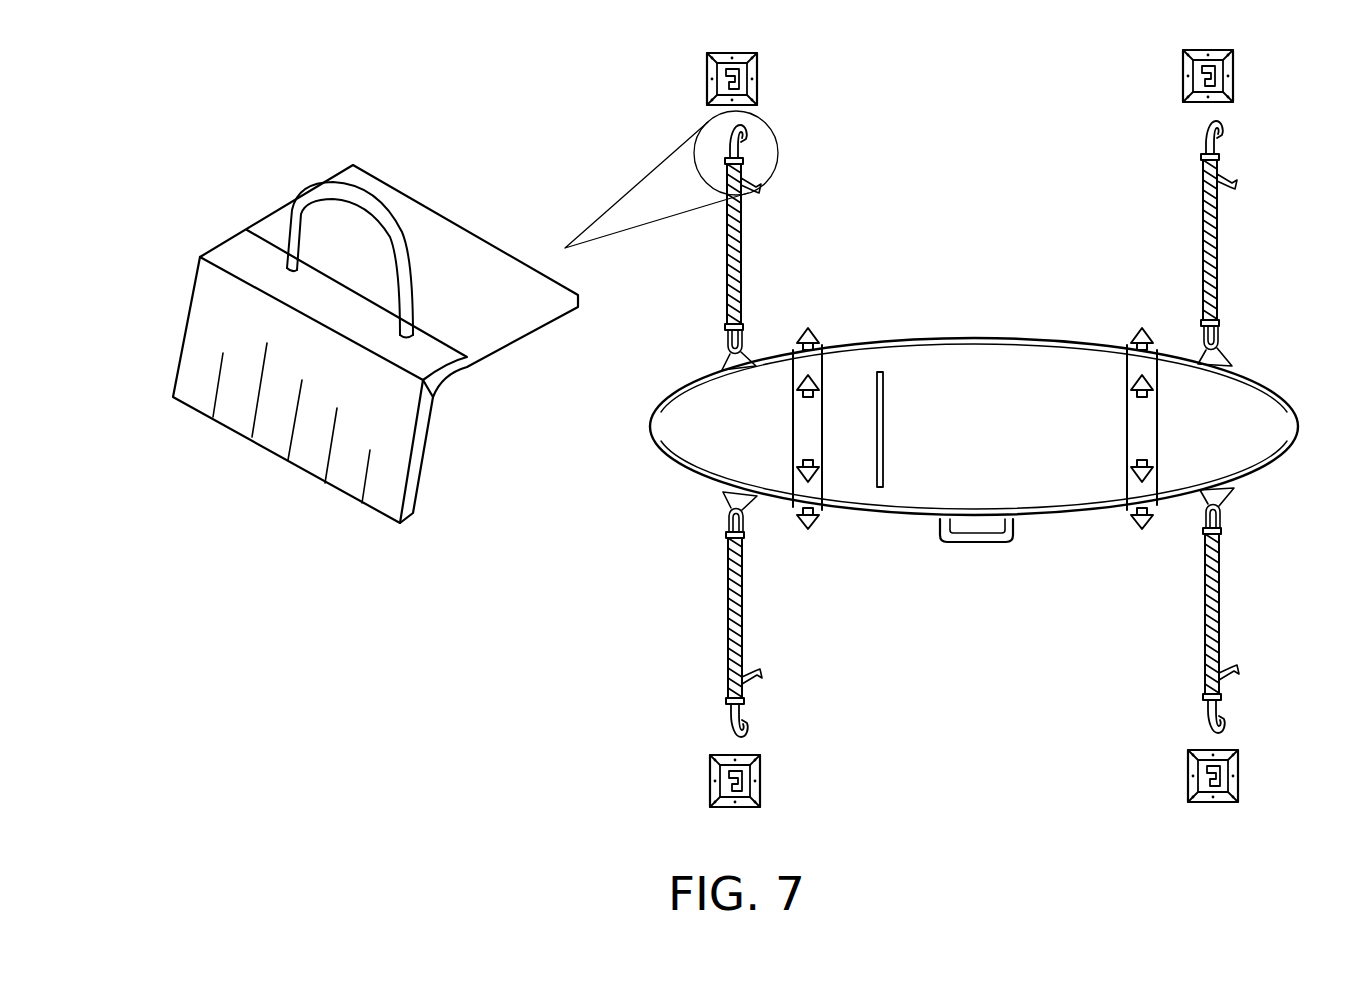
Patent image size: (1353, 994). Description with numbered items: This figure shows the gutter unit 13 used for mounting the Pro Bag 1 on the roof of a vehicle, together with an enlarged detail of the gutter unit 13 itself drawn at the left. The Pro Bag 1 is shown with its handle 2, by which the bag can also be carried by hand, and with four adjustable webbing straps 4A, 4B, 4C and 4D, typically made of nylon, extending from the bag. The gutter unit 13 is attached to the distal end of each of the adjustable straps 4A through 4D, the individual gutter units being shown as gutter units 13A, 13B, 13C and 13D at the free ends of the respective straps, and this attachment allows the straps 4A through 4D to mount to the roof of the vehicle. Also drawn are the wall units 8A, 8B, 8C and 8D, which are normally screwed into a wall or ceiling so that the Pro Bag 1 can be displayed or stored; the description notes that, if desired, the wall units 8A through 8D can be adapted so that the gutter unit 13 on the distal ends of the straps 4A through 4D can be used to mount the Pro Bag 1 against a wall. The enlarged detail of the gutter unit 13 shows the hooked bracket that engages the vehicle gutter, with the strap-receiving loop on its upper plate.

The Pro Bag 1 is at (1280, 418).
The handle 2 is at (977, 542).
The strap 4A is at (740, 232).
The strap 4B is at (1218, 230).
The strap 4C is at (1220, 605).
The strap 4D is at (742, 608).
The wall unit 8A is at (757, 73).
The wall unit 8B is at (1233, 68).
The wall unit 8C is at (1238, 770).
The wall unit 8D is at (762, 777).
The gutter unit 13 is at (430, 412).
The gutter unit 13A is at (743, 130).
The gutter unit 13B is at (1218, 123).
The gutter unit 13C is at (1223, 710).
The gutter unit 13D is at (745, 715).